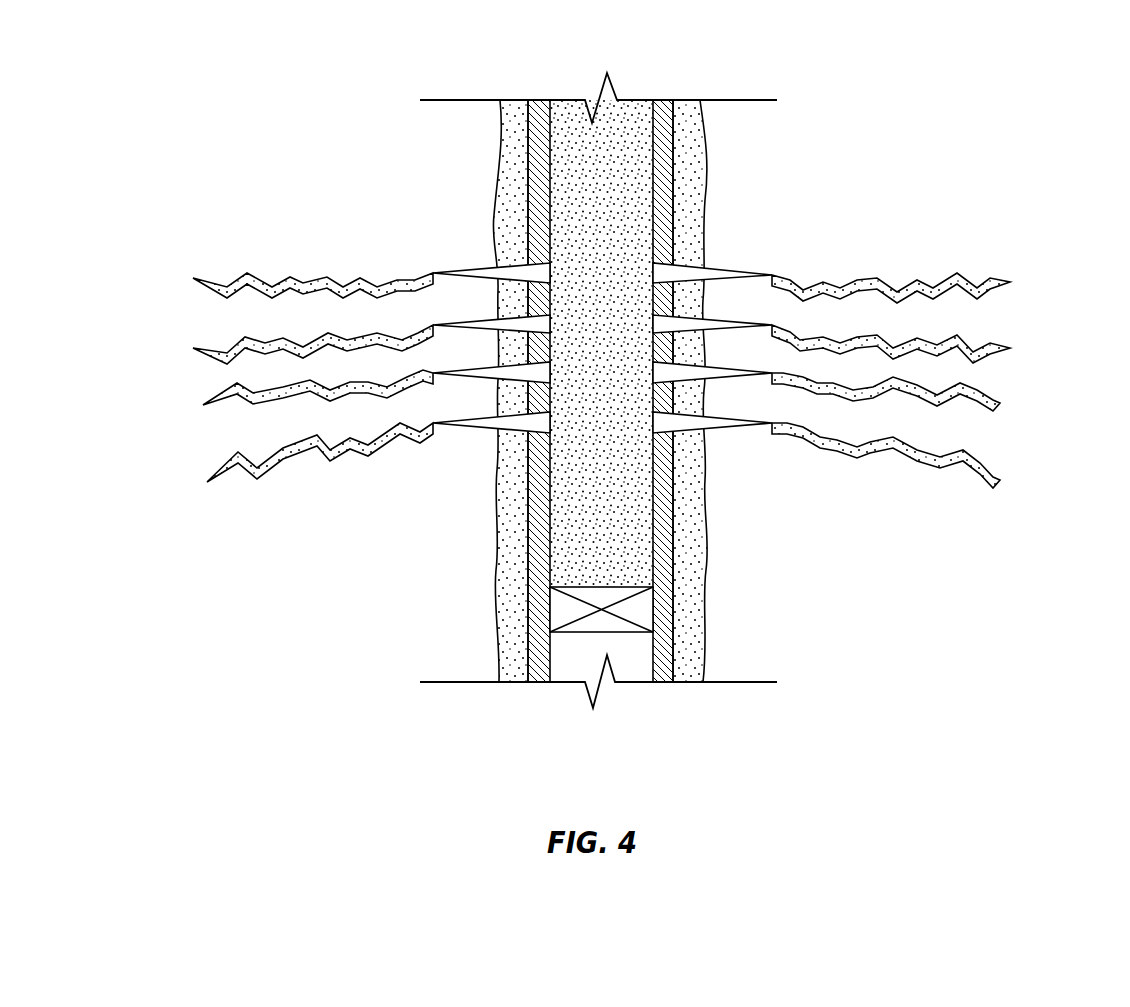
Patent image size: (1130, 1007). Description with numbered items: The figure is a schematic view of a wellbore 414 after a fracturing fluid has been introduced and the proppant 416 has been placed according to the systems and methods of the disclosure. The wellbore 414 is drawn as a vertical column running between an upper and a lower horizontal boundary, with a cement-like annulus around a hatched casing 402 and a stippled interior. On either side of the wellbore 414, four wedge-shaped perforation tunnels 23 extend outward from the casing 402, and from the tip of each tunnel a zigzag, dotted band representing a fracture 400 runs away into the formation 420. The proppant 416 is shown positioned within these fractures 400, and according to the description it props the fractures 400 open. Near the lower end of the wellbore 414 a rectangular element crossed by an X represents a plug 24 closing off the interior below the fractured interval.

The subterranean formation 420 is at (338, 197).
The wellbore 414 is at (510, 107).
The casing 402 is at (527, 197).
The proppant 416 is at (640, 96).
The fractures 400 is at (193, 278).
The perforation tunnels 23 is at (667, 273).
The plug 24 is at (602, 623).